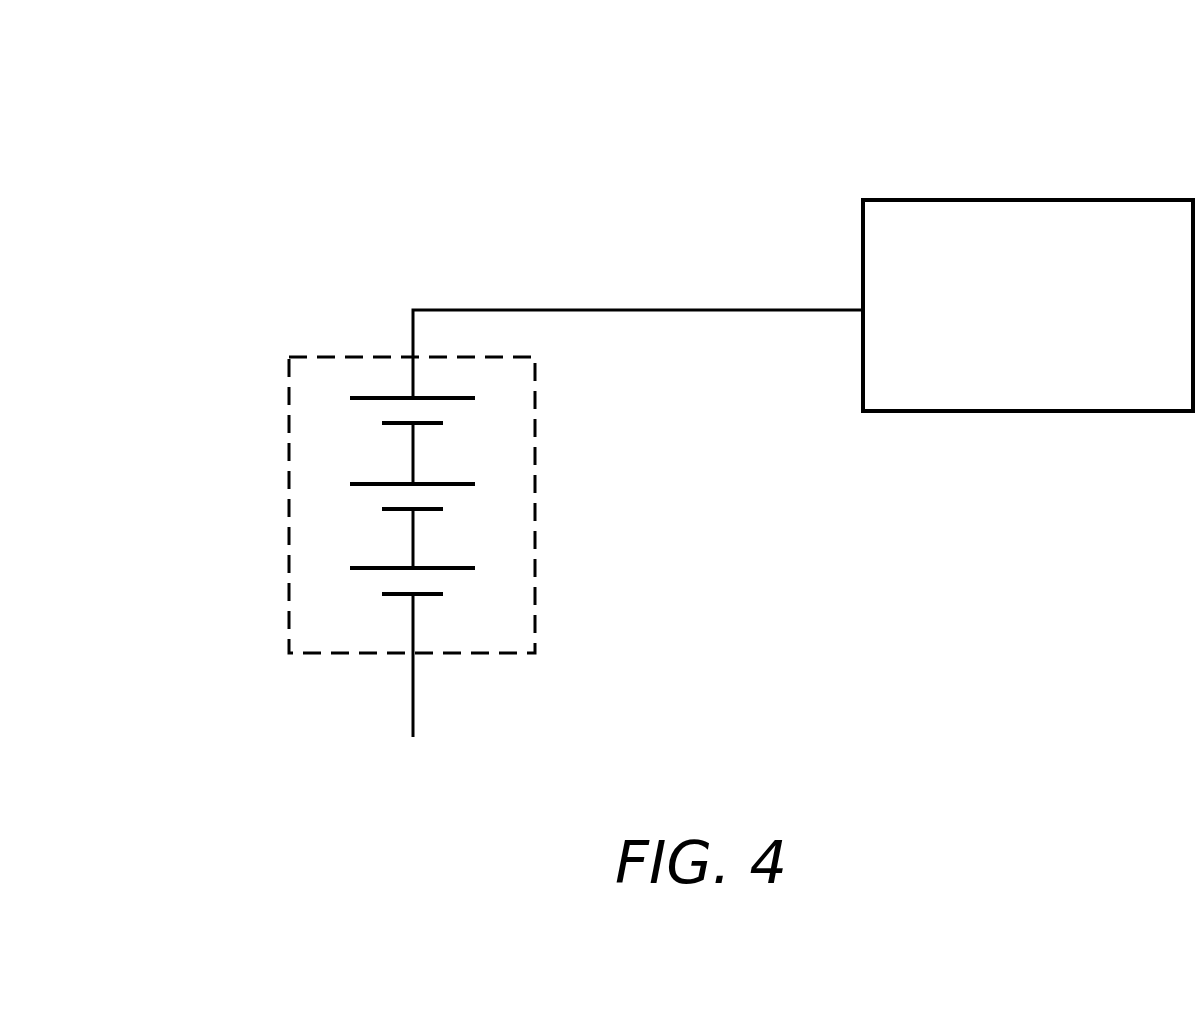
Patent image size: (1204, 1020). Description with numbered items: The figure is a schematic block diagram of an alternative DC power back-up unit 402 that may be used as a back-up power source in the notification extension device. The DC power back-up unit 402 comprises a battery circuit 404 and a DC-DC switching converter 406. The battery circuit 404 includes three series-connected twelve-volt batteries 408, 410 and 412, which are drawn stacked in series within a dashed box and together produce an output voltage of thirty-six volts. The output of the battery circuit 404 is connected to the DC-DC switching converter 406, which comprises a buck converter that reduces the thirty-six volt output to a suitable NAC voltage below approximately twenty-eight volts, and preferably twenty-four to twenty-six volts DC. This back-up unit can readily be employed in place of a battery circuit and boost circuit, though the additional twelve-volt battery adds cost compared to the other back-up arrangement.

The DC power back-up unit 402 is at (398, 133).
The battery circuit 404 is at (535, 503).
The DC-DC switching converter 406 is at (1053, 411).
The 12-volt battery 408 is at (350, 399).
The 12-volt battery 410 is at (357, 485).
The 12-volt battery 412 is at (357, 569).